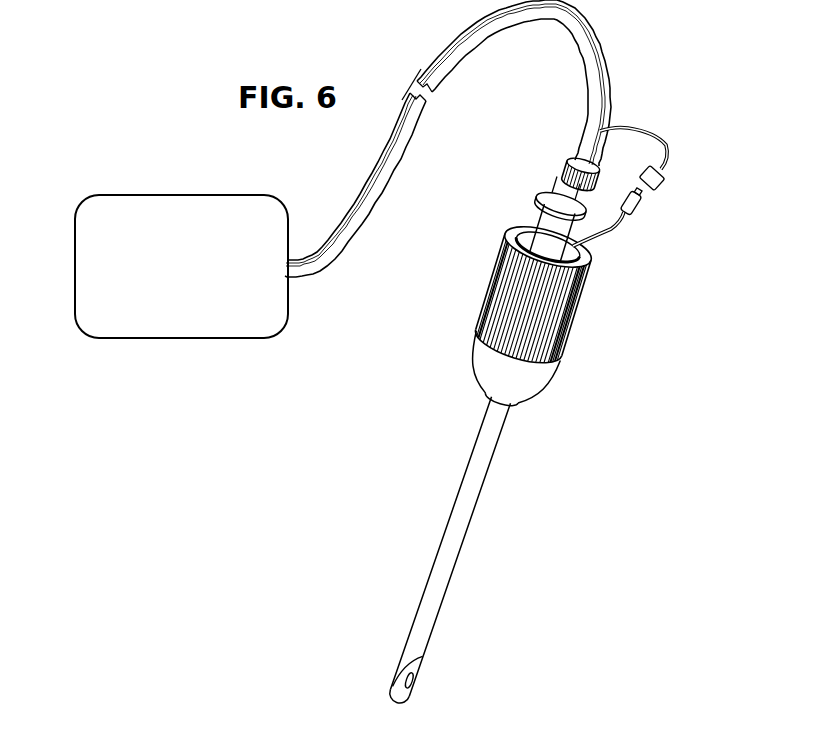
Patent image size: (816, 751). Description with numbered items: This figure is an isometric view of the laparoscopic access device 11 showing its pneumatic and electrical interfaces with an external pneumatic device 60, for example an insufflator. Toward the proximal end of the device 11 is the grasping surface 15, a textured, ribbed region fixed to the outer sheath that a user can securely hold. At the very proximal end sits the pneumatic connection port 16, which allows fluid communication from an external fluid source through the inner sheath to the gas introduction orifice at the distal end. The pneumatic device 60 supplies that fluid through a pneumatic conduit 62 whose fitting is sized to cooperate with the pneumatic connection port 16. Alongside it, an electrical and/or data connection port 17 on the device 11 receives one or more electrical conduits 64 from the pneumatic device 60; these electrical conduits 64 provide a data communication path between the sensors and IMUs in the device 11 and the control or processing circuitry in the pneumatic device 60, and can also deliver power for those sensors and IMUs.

The laparoscopic access device 11 is at (537, 428).
The grasping surface 15 is at (599, 312).
The pneumatic connection port 16 is at (548, 195).
The electrical and/or data connection port 17 is at (636, 227).
The pneumatic device 60 is at (73, 202).
The pneumatic conduit 62 is at (617, 82).
The electrical conduit 64 is at (675, 165).